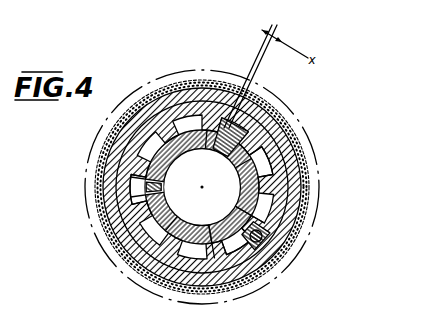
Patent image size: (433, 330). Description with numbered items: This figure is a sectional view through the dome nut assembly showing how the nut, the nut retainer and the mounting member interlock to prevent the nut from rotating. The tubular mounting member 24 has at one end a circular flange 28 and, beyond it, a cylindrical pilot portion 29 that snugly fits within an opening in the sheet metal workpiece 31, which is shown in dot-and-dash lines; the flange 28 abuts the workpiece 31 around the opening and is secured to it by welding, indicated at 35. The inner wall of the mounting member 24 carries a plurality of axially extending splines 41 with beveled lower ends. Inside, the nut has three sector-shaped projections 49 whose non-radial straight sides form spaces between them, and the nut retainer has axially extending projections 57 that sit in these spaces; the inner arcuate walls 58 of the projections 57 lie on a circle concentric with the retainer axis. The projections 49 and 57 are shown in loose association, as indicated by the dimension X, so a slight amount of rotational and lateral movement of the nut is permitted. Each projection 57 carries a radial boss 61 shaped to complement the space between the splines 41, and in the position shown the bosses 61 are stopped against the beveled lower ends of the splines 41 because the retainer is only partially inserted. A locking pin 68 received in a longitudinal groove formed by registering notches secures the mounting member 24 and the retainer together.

The tubular mounting member 24 is at (282, 110).
The circular flange 28 is at (125, 132).
The cylindrical pilot portion 29 is at (213, 68).
The workpiece 31 is at (91, 226).
The weld 35 is at (155, 88).
The splines 41 is at (167, 224).
The projections 49 is at (174, 156).
The projections 57 is at (135, 188).
The inner arcuate walls 58 is at (218, 223).
The radial boss 61 is at (122, 182).
The locking pin 68 is at (263, 238).